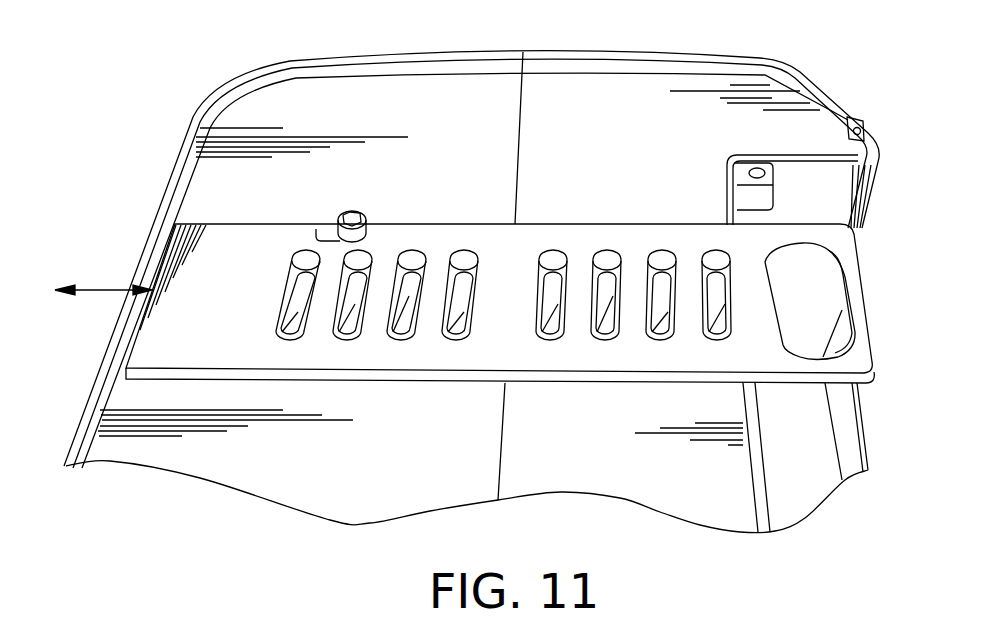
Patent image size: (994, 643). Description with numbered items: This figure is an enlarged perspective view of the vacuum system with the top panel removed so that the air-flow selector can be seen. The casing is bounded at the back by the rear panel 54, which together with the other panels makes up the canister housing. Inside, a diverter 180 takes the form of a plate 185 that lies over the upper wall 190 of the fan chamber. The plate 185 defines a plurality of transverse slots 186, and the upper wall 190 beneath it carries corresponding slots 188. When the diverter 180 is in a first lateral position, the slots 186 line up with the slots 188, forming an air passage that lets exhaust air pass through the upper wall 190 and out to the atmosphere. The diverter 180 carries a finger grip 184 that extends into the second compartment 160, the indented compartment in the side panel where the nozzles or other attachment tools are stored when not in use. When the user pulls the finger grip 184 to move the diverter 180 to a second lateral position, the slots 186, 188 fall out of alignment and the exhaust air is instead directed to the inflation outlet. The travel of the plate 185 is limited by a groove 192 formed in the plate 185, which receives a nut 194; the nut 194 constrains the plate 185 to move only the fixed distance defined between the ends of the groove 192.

The rear panel 54 is at (375, 57).
The second compartment 160 is at (860, 196).
The diverter 180 is at (205, 270).
The finger grip 184 is at (807, 335).
The plate 185 is at (262, 228).
The transverse slots 186 is at (552, 253).
The slots 188 is at (550, 307).
The upper wall 190 is at (580, 90).
The groove 192 is at (324, 230).
The nut 194 is at (366, 208).